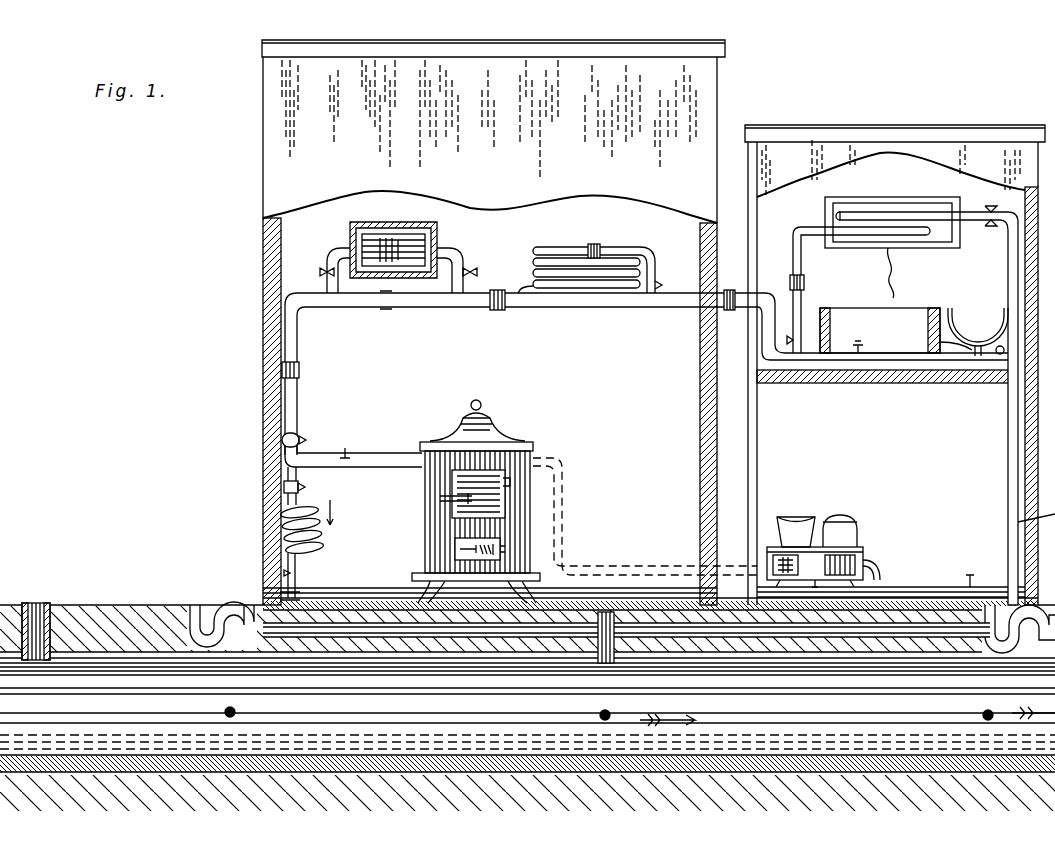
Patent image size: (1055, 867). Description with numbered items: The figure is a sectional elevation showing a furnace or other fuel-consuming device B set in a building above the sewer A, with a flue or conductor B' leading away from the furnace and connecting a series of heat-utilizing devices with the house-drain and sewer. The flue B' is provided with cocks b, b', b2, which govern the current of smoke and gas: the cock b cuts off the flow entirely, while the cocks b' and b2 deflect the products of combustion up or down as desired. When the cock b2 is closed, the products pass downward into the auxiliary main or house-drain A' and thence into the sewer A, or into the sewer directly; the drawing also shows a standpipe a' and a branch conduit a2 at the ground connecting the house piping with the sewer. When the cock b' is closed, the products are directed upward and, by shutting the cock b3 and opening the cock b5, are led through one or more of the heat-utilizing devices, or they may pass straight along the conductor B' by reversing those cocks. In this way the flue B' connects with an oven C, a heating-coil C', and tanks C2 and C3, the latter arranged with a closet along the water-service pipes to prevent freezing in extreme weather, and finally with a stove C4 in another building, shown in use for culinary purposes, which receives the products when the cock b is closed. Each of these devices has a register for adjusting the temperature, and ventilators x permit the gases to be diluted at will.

The sewer A is at (527, 737).
The auxiliary main or house-drain A' is at (626, 603).
The standpipe a' is at (48, 621).
The branch conduit a2 is at (605, 640).
The furnace or fuel-consuming device B is at (479, 501).
The flue B' is at (644, 413).
The cock b is at (346, 443).
The cock b' is at (306, 527).
The cock b2 is at (308, 355).
The cock b3 is at (379, 291).
The cock b5 is at (476, 264).
The oven C is at (395, 244).
The heating-coil C' is at (590, 258).
The tank C2 is at (914, 332).
The tank C3 is at (892, 238).
The stove C4 is at (823, 533).
The ventilators x is at (315, 386).